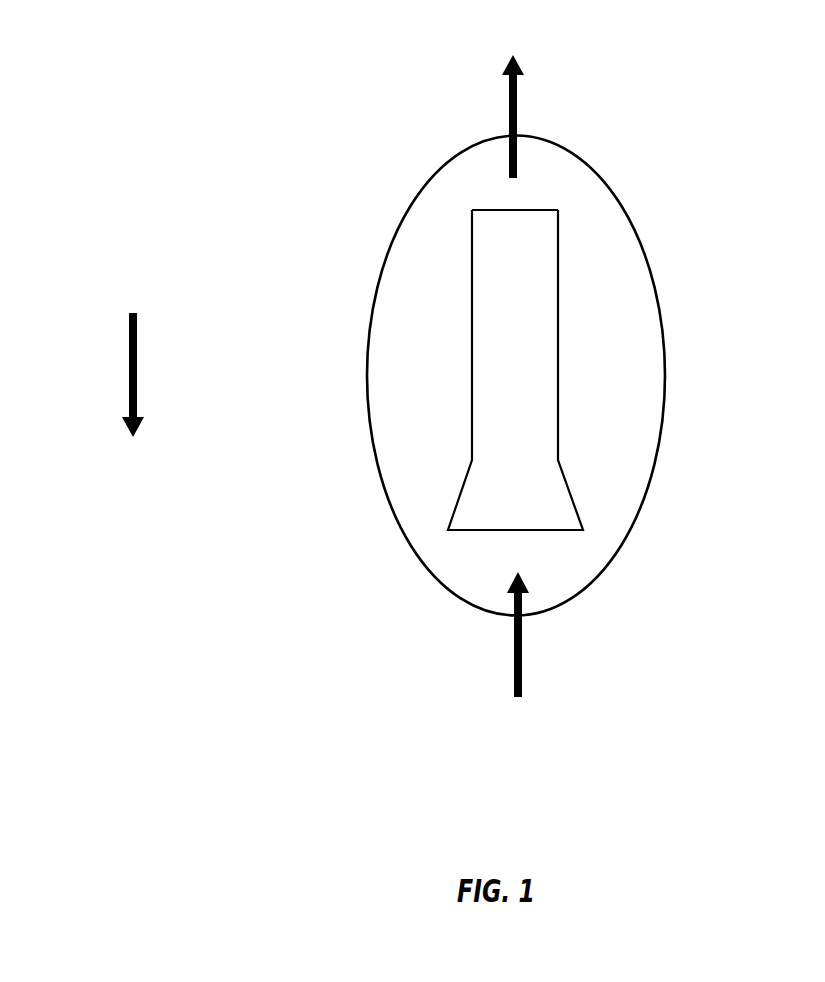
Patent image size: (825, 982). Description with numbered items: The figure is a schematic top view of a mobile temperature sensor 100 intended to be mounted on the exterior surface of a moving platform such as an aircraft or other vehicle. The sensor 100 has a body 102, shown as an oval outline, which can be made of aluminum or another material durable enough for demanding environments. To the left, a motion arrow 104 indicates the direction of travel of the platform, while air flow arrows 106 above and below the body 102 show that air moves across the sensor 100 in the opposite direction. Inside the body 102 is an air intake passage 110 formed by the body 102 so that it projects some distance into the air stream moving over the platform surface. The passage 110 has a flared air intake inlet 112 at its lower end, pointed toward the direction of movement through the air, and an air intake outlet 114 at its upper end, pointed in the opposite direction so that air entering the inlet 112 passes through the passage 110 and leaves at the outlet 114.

The mobile temperature sensor 100 is at (298, 142).
The body 102 is at (633, 358).
The motion arrow 104 is at (130, 362).
The air flow arrows 106 is at (508, 108).
The air intake passage 110 is at (535, 378).
The air intake inlet 112 is at (552, 538).
The air intake outlet 114 is at (525, 208).